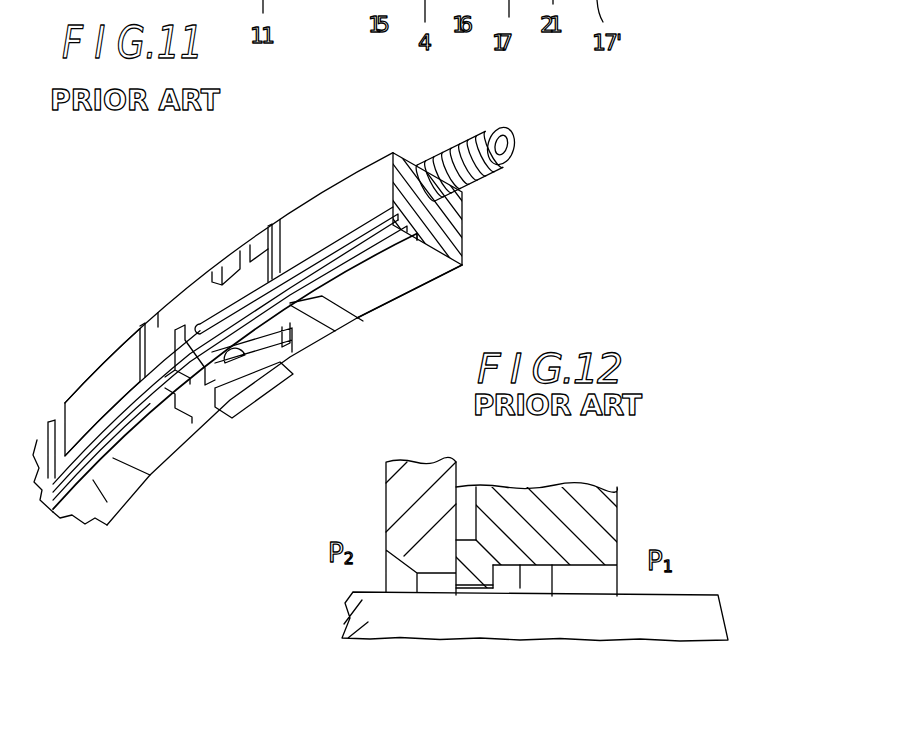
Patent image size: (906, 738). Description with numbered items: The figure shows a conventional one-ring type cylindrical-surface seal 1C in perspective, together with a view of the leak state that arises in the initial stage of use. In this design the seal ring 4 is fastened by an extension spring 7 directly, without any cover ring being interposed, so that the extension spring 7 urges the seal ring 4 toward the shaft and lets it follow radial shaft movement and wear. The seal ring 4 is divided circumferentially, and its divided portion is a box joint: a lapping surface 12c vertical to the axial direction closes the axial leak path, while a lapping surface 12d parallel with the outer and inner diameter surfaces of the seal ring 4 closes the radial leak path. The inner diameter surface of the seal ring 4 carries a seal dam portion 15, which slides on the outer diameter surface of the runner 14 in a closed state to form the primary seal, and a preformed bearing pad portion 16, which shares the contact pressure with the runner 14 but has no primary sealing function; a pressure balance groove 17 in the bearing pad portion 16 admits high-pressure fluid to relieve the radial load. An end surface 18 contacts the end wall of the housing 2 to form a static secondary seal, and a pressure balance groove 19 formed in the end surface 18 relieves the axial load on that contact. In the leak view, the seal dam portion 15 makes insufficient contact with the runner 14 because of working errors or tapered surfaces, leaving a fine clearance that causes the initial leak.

In FIG. 11, the cylindrical-surface seal 1C is at (306, 170).
In FIG. 11, the seal ring 4 is at (430, 216).
In FIG. 12, the seal ring 4 is at (572, 513).
In FIG. 11, the extension spring 7 is at (452, 143).
In FIG. 11, the end surface 18 is at (113, 428).
In FIG. 11, the pressure balance groove 19 is at (268, 232).
In FIG. 11, the lapping surface 12d is at (200, 306).
In FIG. 11, the lapping surface 12c is at (257, 352).
In FIG. 11, the pressure balance groove 17 is at (405, 248).
In FIG. 12, the pressure balance groove 17 is at (553, 597).
In FIG. 11, the bearing pad portion 16 is at (257, 379).
In FIG. 12, the bearing pad portion 16 is at (570, 597).
In FIG. 11, the seal dam portion 15 is at (372, 320).
In FIG. 12, the seal dam portion 15 is at (468, 590).
In FIG. 12, the housing 2 is at (400, 500).
In FIG. 12, the runner 14 is at (383, 617).